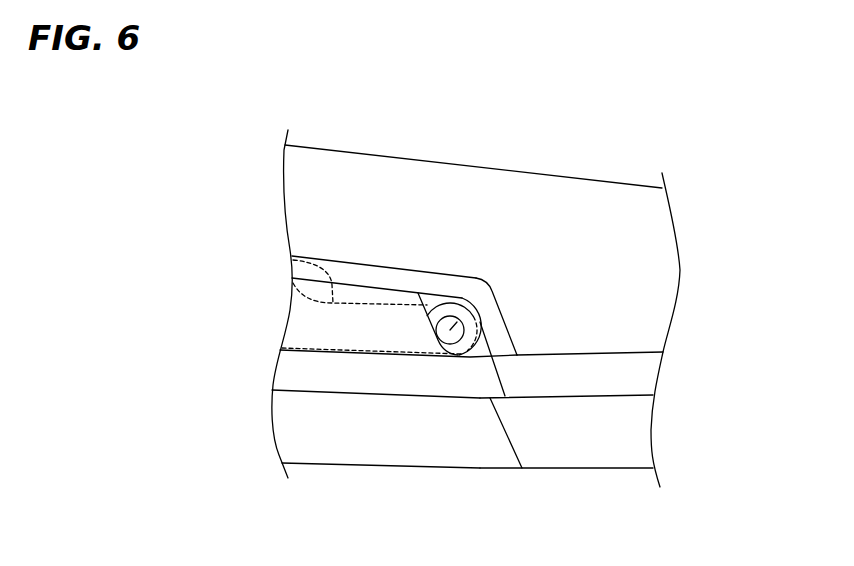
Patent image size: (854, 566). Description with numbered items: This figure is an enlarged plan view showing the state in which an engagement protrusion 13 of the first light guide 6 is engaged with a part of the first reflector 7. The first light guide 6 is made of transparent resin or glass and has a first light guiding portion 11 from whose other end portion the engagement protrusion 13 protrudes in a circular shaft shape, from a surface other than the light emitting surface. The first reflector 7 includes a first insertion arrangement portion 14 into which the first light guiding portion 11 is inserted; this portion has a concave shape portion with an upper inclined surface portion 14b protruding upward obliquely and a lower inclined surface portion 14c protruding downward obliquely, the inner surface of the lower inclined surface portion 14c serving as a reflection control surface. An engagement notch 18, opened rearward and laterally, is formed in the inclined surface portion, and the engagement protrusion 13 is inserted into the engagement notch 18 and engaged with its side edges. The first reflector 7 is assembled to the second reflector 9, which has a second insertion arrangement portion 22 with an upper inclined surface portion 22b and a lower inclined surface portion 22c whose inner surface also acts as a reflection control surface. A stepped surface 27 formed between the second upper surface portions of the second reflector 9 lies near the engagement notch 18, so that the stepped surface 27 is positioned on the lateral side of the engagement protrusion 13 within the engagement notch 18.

The first light guide 6 is at (293, 282).
The first reflector 7 is at (335, 452).
The second reflector 9 is at (620, 452).
The first light guiding portion 11 is at (293, 260).
The engagement protrusion 13 is at (468, 278).
The first insertion arrangement portion 14 is at (357, 291).
The upper inclined surface portion 14b is at (380, 288).
The lower inclined surface portion 14c is at (375, 443).
The engagement notch 18 is at (452, 317).
The second insertion arrangement portion 22 is at (650, 329).
The upper inclined surface portion 22b is at (643, 378).
The lower inclined surface portion 22c is at (592, 456).
The stepped surface 27 is at (476, 317).